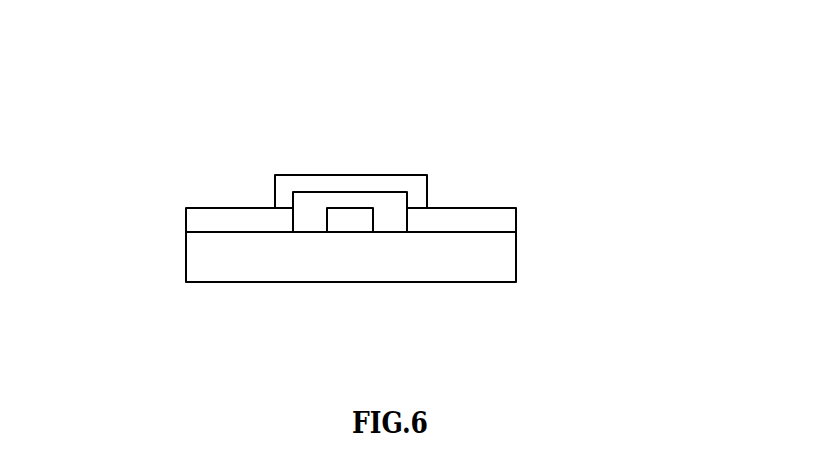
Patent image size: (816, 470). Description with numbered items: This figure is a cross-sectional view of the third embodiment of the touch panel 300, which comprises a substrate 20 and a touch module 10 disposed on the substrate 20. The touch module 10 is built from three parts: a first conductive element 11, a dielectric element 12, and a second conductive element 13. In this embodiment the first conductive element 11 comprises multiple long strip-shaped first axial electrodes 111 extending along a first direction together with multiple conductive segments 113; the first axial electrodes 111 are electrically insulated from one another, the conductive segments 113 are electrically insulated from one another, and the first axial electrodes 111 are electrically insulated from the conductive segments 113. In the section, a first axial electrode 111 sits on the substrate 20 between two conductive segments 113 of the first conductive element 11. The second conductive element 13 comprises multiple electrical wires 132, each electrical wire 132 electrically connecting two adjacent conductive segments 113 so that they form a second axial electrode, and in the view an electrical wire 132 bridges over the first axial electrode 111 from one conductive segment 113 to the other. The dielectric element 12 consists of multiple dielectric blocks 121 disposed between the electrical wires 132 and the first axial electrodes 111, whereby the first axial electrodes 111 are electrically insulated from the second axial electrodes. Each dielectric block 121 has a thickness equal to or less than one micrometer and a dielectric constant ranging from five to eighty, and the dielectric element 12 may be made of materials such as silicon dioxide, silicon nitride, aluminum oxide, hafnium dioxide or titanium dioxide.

The touch panel 300 is at (85, 112).
The touch module 10 is at (657, 130).
The first conductive element 11 is at (597, 182).
The first axial electrode 111 is at (365, 218).
The conductive segment 113 is at (517, 222).
The dielectric element 12 is at (385, 181).
The dielectric block 121 is at (372, 194).
The second conductive element 13 is at (432, 173).
The electrical wire 132 is at (425, 183).
The substrate 20 is at (507, 273).